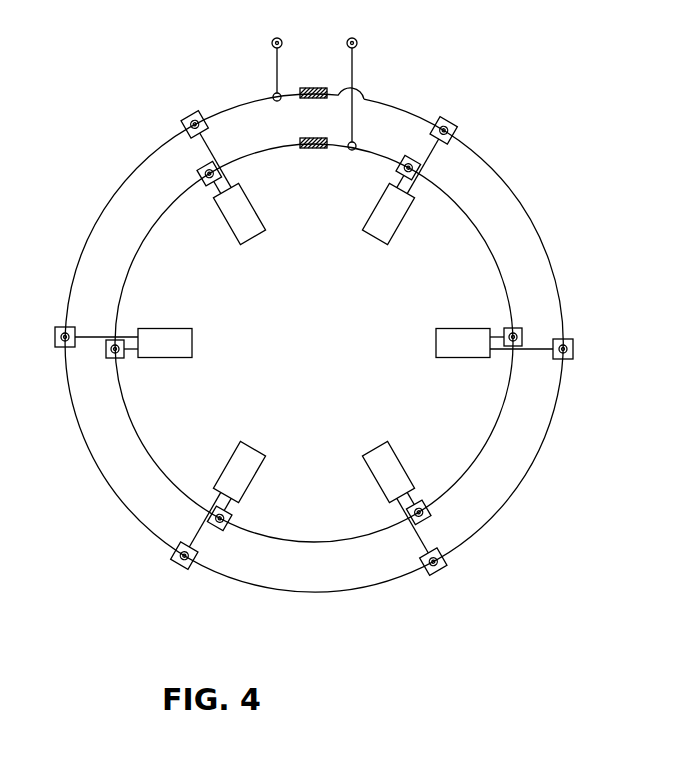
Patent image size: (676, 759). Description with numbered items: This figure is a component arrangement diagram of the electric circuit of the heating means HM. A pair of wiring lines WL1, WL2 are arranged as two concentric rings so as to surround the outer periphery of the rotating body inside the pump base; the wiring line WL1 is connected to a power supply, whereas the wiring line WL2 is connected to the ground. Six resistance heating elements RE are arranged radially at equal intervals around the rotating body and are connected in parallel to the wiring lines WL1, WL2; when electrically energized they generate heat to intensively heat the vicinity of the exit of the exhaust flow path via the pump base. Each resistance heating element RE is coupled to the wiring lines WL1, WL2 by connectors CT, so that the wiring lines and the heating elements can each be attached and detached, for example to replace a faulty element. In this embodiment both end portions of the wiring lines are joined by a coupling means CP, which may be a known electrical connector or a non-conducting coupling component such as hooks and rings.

The heating means HM is at (555, 605).
The resistance heating element RE is at (257, 237).
The connector CT is at (453, 122).
The wiring line WL1 is at (270, 73).
The wiring line WL2 is at (358, 67).
The coupling means CP is at (318, 84).